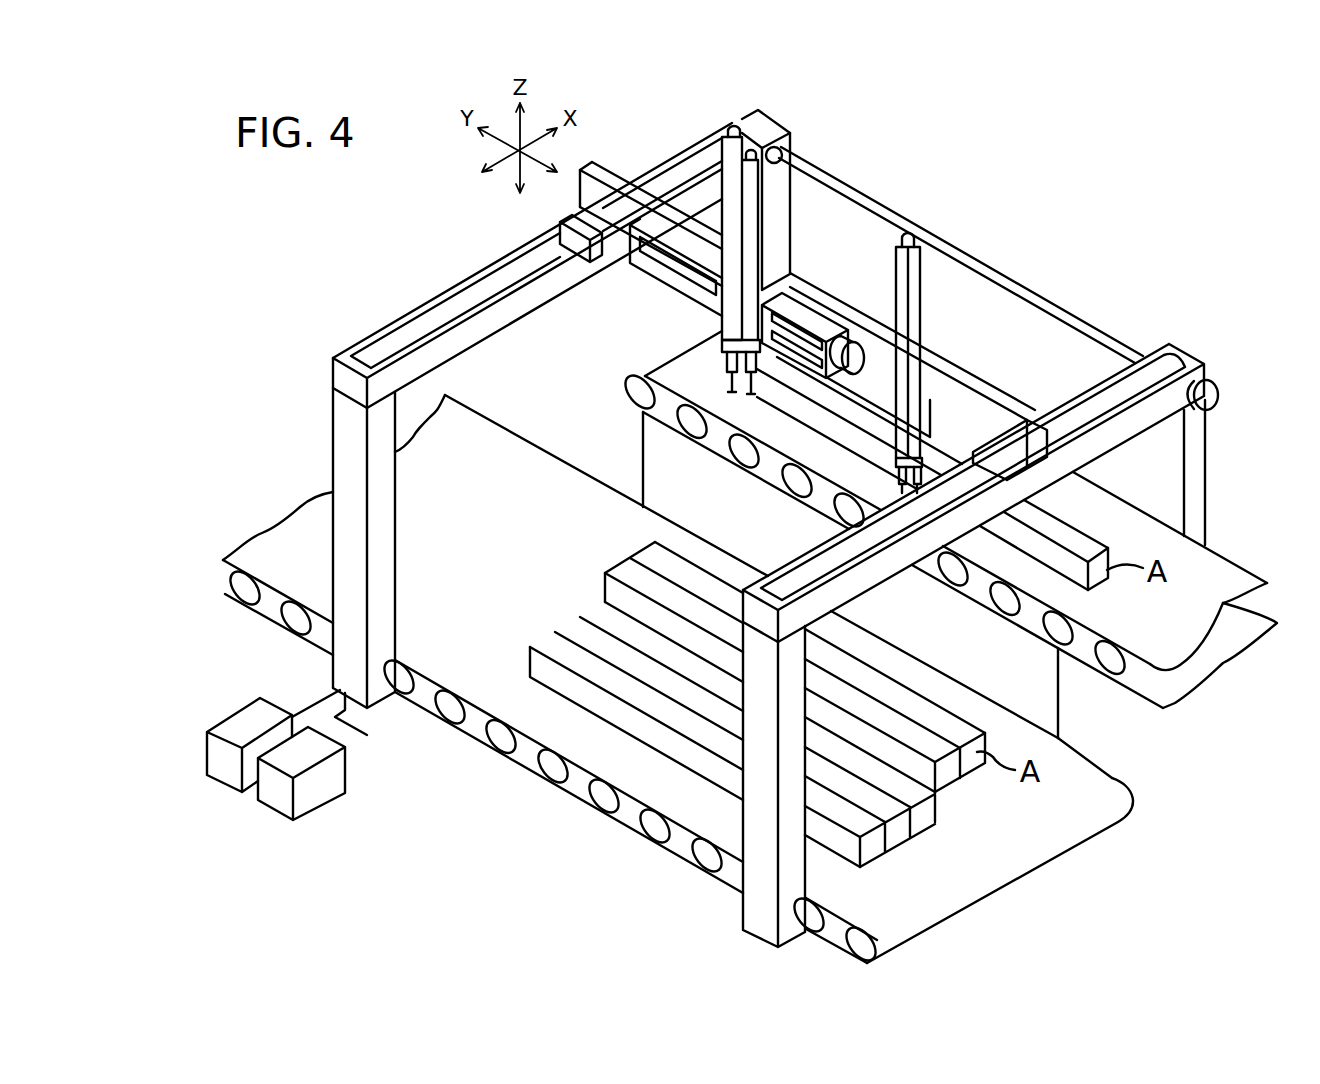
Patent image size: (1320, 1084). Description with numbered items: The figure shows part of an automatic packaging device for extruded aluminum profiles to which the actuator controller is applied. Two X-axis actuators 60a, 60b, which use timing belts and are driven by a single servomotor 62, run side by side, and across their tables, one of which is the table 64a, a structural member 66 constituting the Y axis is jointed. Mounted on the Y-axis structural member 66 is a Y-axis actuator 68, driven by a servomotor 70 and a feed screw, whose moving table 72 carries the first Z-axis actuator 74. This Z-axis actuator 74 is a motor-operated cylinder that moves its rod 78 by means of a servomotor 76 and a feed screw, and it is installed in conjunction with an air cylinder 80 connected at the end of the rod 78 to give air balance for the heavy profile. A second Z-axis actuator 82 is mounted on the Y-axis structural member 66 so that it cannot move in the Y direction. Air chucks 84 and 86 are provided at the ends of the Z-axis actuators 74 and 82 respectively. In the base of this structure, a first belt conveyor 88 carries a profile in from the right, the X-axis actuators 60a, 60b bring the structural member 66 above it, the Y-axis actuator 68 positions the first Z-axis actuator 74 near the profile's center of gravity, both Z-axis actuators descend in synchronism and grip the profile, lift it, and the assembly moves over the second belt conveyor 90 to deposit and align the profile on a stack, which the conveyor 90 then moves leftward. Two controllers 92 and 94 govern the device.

The X-axis actuator 60a is at (1153, 413).
The X-axis actuator 60b is at (430, 323).
The servomotor 62 is at (1218, 402).
The table 64a is at (1000, 463).
The Y-axis structural member 66 is at (975, 390).
The Y-axis actuator 68 is at (815, 310).
The servomotor 70 is at (847, 353).
The moving table 72 is at (767, 300).
The Z-axis actuator 74 is at (723, 188).
The servomotor 76 is at (730, 128).
The rod 78 is at (725, 350).
The air cylinder 80 is at (770, 216).
The second Z-axis actuator 82 is at (921, 334).
The air chuck 84 is at (740, 395).
The air chuck 86 is at (890, 478).
The first belt conveyor 88 is at (1227, 572).
The second belt conveyor 90 is at (1098, 784).
The controller 92 is at (238, 713).
The controller 94 is at (337, 778).